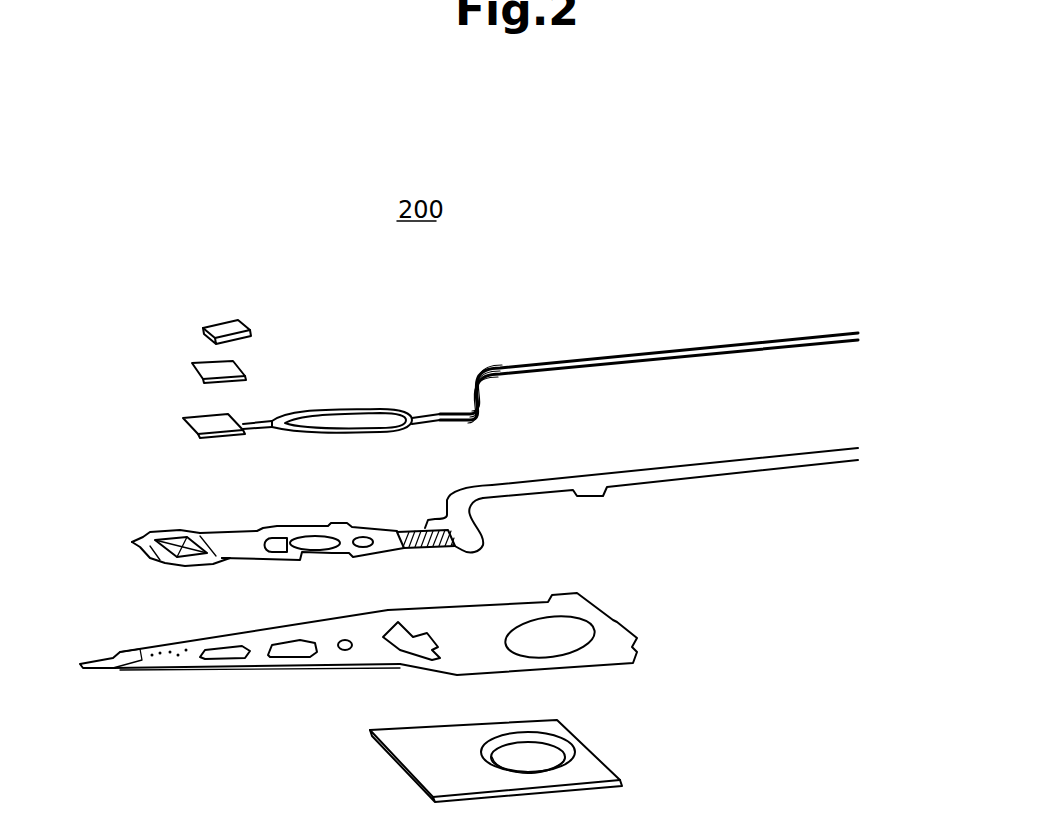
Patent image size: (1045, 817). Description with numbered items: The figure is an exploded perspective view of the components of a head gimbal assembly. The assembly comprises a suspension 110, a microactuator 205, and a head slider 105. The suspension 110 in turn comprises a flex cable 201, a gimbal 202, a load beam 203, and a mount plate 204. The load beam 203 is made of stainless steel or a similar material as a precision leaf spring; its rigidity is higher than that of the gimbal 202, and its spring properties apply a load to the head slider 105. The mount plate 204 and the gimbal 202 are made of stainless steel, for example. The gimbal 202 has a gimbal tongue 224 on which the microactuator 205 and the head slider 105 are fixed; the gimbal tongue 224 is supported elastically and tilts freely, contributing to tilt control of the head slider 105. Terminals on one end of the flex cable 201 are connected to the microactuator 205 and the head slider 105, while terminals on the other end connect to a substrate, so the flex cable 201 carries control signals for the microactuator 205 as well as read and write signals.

The head slider 105 is at (225, 318).
The microactuator 205 is at (240, 362).
The flex cable 201 is at (757, 340).
The gimbal 202 is at (490, 485).
The gimbal tongue 224 is at (182, 540).
The load beam 203 is at (496, 605).
The mount plate 204 is at (604, 757).
The suspension 110 is at (730, 682).